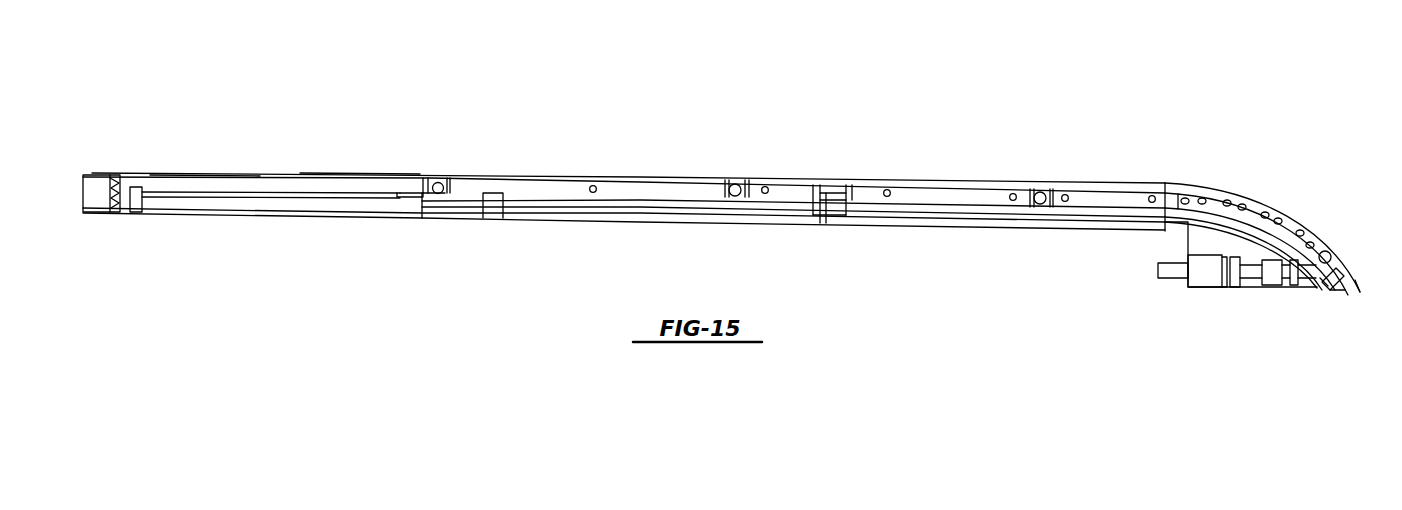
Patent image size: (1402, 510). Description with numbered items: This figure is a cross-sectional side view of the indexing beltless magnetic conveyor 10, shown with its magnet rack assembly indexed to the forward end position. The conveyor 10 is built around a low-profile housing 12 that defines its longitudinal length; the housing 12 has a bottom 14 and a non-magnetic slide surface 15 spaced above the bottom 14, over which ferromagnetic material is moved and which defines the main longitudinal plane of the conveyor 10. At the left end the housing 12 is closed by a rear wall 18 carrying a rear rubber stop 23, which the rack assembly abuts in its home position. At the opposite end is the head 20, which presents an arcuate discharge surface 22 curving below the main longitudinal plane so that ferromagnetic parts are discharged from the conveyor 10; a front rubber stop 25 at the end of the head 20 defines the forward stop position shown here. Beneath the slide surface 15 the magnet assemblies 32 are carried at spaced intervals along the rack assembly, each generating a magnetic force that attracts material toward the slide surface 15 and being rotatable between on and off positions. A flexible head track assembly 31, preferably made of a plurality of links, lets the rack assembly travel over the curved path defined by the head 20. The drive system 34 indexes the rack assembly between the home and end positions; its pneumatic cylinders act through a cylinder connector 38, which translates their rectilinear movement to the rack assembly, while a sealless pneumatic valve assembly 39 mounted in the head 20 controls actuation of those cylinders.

The conveyor 10 is at (292, 262).
The housing 12 is at (208, 182).
The bottom 14 is at (367, 213).
The non-magnetic slide surface 15 is at (377, 173).
The rear wall 18 is at (83, 180).
The head 20 is at (1322, 222).
The arcuate discharge surface 22 is at (1285, 212).
The rear rubber stop 23 is at (115, 198).
The front rubber stop 25 is at (1340, 290).
The flexible head track assembly 31 is at (1233, 200).
The magnet assemblies 32 is at (447, 192).
The drive system 34 is at (307, 203).
The cylinder connector 38 is at (832, 190).
The sealless pneumatic valve assembly 39 is at (1205, 283).